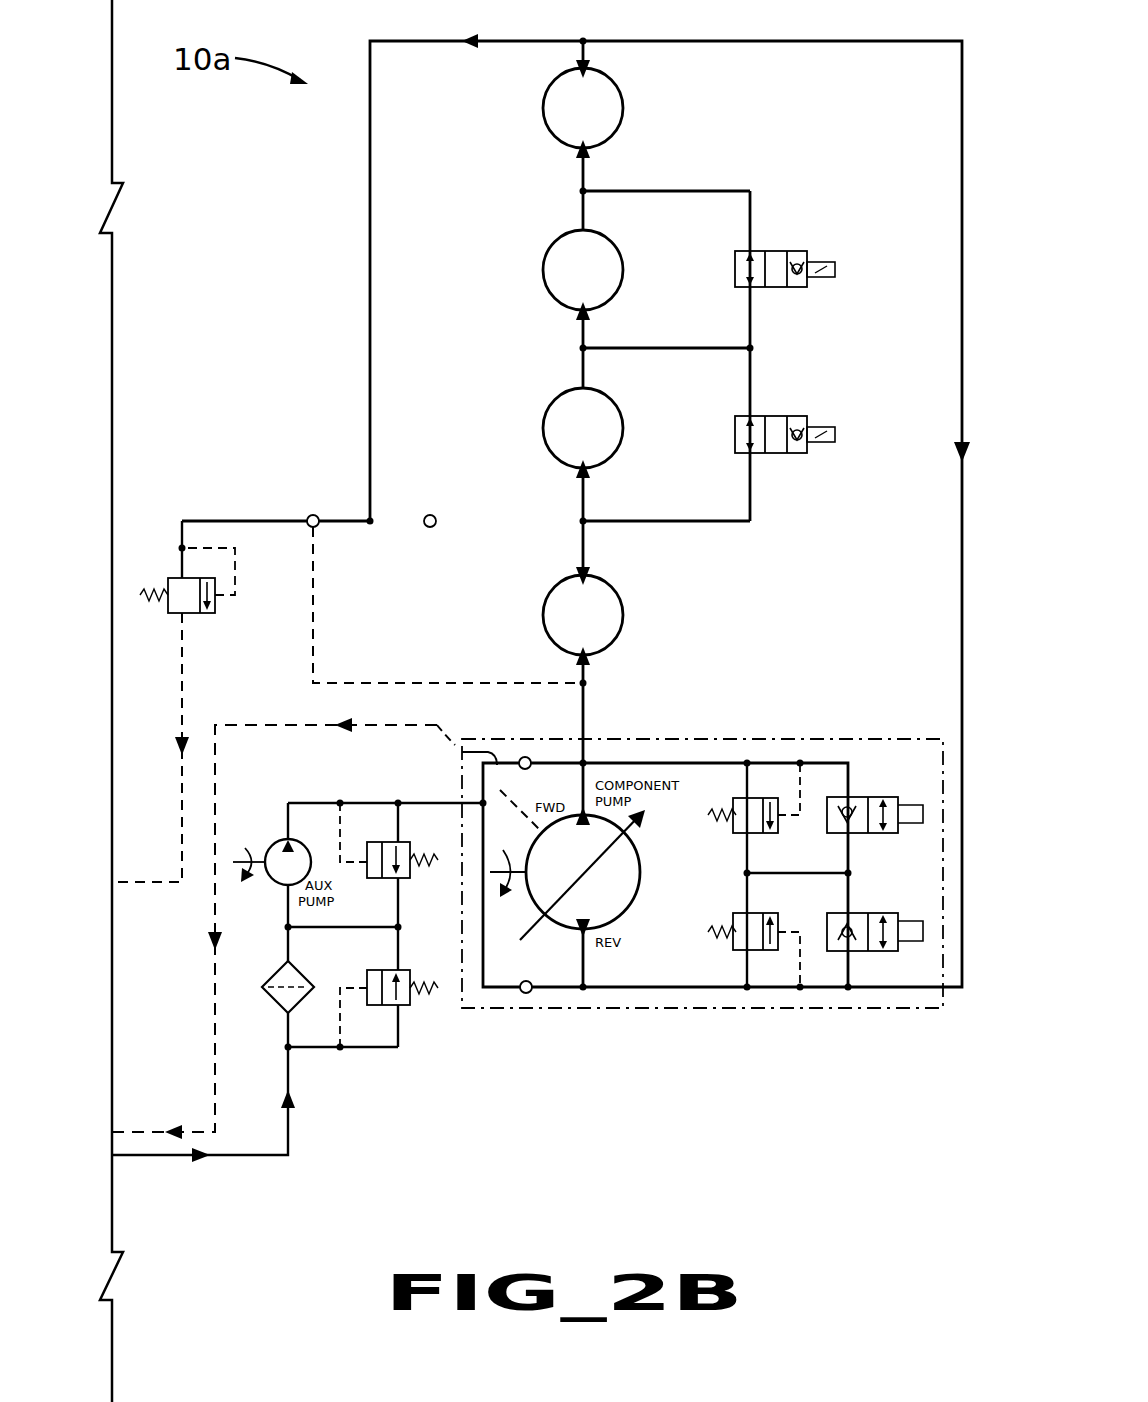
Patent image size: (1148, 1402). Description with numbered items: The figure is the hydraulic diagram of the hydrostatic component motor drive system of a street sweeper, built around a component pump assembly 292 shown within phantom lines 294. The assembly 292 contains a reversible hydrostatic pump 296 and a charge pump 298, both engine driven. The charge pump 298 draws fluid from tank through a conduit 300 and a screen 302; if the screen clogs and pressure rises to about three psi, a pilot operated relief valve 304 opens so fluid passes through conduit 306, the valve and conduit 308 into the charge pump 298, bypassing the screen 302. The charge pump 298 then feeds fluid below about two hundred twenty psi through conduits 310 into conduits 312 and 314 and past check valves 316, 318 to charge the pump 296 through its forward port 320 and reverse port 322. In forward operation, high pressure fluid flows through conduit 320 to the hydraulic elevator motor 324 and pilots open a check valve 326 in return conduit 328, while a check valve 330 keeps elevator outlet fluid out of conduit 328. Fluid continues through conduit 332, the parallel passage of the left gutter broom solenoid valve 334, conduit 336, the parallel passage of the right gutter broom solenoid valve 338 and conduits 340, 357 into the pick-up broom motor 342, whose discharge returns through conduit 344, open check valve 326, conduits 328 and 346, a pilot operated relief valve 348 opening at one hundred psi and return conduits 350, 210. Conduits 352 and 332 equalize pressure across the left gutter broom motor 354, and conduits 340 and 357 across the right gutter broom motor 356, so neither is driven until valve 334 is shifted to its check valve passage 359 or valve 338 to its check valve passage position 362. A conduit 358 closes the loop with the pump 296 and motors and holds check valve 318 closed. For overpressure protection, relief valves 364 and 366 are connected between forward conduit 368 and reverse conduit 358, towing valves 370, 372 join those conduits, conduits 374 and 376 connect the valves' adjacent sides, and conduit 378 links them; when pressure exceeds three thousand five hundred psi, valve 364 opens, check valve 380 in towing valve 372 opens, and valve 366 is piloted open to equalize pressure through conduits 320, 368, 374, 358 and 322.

The return conduit 210 is at (180, 880).
The component pump assembly 292 is at (700, 742).
The phantom lines 294 is at (752, 736).
The reversible hydrostatic pump 296 is at (590, 872).
The charge pump 298 is at (275, 838).
The conduit 300 is at (145, 1158).
The screen 302 is at (272, 975).
The pilot operated relief valve 304 is at (365, 982).
The conduit 306 is at (350, 1048).
The conduit 308 is at (385, 925).
The conduits 310 is at (345, 800).
The conduit 312 is at (458, 752).
The conduit 314 is at (483, 994).
The check valve 316 is at (522, 756).
The reverse check valve 318 is at (524, 994).
The forward port 320 is at (586, 678).
The reverse port 322 is at (580, 958).
The hydraulic elevator motor 324 is at (624, 614).
The check valve 326 is at (310, 514).
The return conduit 328 is at (210, 521).
The check valve 330 is at (426, 514).
The conduit 332 is at (622, 521).
The left gutter broom solenoid valve 334 is at (807, 445).
The conduit 336 is at (752, 362).
The right gutter broom solenoid valve 338 is at (804, 278).
The conduit 340 is at (752, 198).
The pick-up broom motor 342 is at (548, 122).
The conduit 344 is at (372, 82).
The conduit 346 is at (178, 536).
The pilot operated relief valve 348 is at (212, 610).
The return conduit 350 is at (183, 680).
The conduit 352 is at (718, 348).
The left gutter broom motor 354 is at (543, 428).
The right gutter broom motor 356 is at (543, 270).
The conduit 357 is at (722, 191).
The reverse conduit 358 is at (845, 41).
The check valve passage 359 is at (797, 430).
The check valve passage position 362 is at (797, 264).
The pilot operated relief valve 364 is at (780, 810).
The pilot operated relief valve 366 is at (783, 925).
The forward conduit 368 is at (622, 764).
The towing valve 370 is at (862, 797).
The towing valve 372 is at (870, 895).
The conduits 374 is at (744, 893).
The conduit 376 is at (851, 866).
The conduit 378 is at (845, 872).
The check valve 380 is at (847, 937).